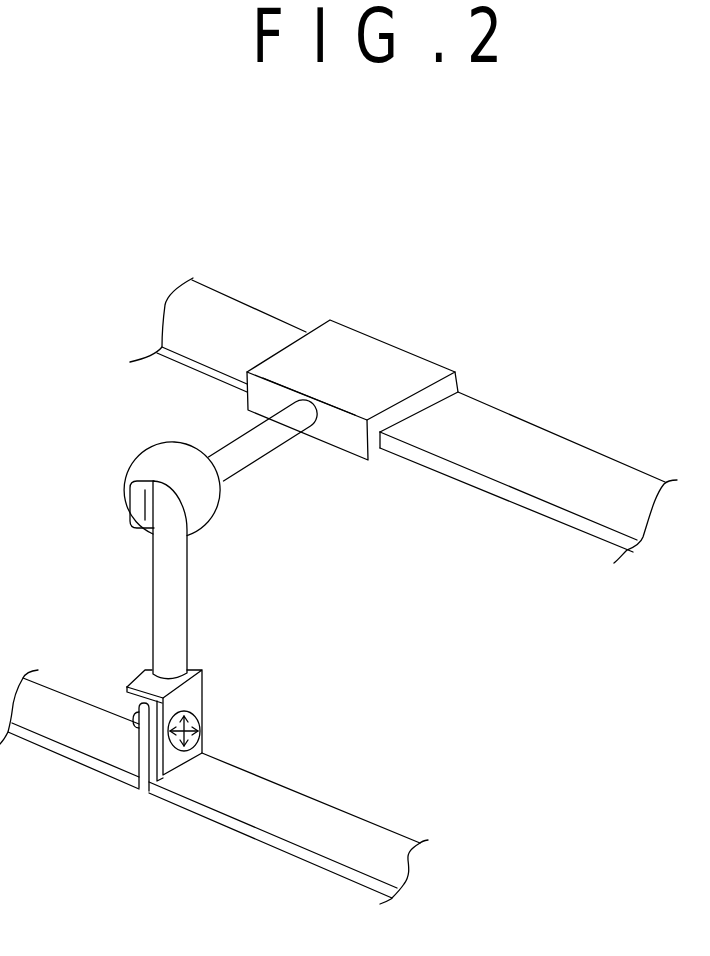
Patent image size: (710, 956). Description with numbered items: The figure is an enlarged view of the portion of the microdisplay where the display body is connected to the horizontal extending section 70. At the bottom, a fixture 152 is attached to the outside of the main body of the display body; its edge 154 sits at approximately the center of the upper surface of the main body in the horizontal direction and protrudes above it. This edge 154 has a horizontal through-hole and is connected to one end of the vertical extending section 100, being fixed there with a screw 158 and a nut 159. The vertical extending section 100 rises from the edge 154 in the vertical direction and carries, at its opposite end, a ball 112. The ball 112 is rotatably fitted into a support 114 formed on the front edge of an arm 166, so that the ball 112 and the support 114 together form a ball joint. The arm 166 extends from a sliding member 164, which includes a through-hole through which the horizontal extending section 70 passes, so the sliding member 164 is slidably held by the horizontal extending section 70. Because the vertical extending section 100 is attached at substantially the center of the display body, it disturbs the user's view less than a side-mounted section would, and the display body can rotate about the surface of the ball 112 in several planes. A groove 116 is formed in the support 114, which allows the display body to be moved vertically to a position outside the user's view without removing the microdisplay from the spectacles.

The horizontal extending section 70 is at (528, 448).
The sliding member 164 is at (370, 363).
The arm 166 is at (248, 450).
The support 114 is at (135, 464).
The groove 116 is at (156, 502).
The ball 112 is at (128, 518).
The vertical extending section 100 is at (167, 628).
The nut 159 is at (133, 717).
The edge 154 is at (158, 698).
The screw 158 is at (200, 725).
The fixture 152 is at (310, 823).